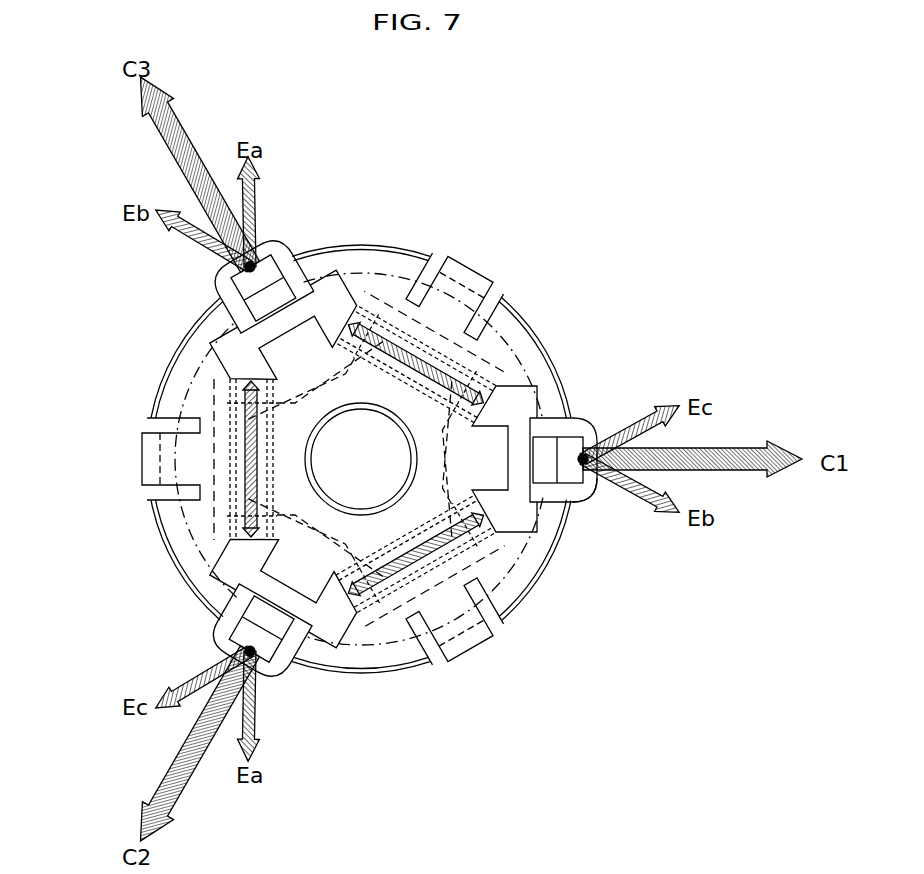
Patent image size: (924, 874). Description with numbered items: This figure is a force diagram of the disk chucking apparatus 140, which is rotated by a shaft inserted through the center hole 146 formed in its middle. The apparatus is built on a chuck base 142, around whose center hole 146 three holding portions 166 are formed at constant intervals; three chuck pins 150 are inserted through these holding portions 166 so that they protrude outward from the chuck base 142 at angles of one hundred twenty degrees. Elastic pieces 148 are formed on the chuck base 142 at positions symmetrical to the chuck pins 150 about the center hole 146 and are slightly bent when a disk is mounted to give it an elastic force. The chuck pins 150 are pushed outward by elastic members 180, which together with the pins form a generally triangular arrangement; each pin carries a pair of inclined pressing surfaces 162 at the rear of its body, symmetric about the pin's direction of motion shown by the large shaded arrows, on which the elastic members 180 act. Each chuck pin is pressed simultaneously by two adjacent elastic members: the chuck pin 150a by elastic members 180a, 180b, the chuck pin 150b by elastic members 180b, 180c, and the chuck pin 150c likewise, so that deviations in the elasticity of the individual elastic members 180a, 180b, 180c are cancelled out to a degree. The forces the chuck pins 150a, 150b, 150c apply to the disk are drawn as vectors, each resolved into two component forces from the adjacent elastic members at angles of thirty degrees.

The disk chucking apparatus 140 is at (357, 451).
The chuck base 142 is at (536, 320).
The center hole 146 is at (350, 492).
The elastic piece 148 is at (146, 461).
The chuck pin 150 is at (367, 458).
The chuck pin 150a is at (244, 288).
The chuck pin 150b is at (584, 420).
The chuck pin 150c is at (233, 637).
The pressing surface 162 is at (508, 382).
The holding portion 166 is at (568, 506).
The elastic member 180 is at (272, 464).
The elastic member 180a is at (240, 415).
The elastic member 180b is at (389, 330).
The elastic member 180c is at (392, 593).